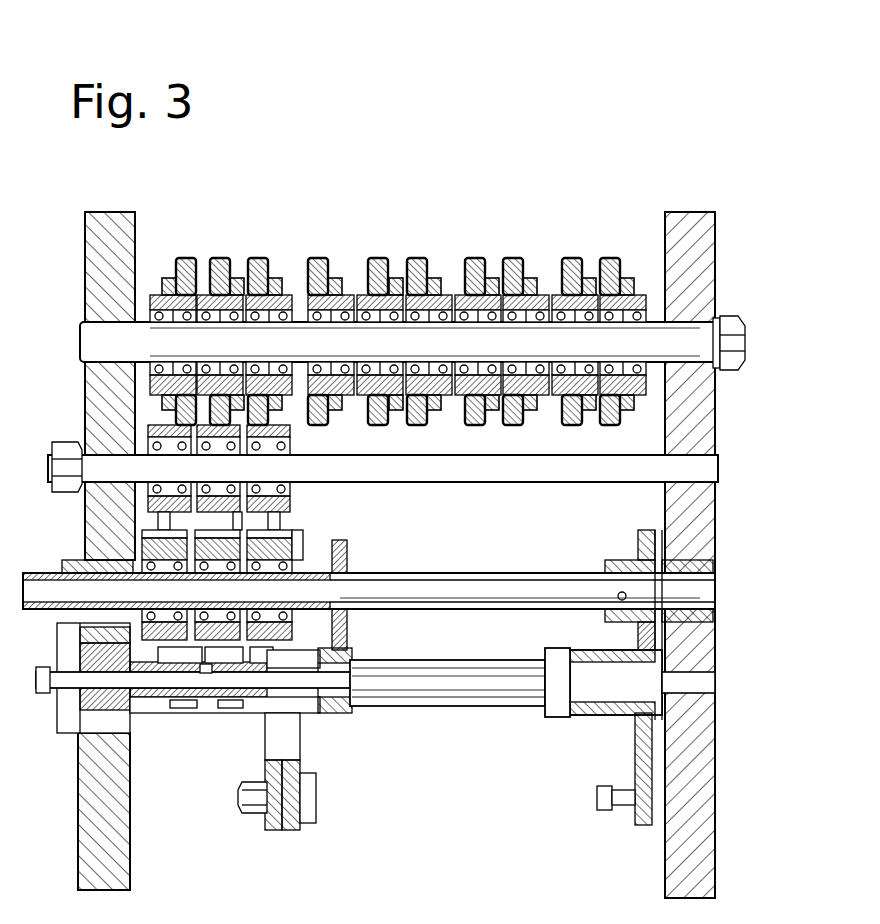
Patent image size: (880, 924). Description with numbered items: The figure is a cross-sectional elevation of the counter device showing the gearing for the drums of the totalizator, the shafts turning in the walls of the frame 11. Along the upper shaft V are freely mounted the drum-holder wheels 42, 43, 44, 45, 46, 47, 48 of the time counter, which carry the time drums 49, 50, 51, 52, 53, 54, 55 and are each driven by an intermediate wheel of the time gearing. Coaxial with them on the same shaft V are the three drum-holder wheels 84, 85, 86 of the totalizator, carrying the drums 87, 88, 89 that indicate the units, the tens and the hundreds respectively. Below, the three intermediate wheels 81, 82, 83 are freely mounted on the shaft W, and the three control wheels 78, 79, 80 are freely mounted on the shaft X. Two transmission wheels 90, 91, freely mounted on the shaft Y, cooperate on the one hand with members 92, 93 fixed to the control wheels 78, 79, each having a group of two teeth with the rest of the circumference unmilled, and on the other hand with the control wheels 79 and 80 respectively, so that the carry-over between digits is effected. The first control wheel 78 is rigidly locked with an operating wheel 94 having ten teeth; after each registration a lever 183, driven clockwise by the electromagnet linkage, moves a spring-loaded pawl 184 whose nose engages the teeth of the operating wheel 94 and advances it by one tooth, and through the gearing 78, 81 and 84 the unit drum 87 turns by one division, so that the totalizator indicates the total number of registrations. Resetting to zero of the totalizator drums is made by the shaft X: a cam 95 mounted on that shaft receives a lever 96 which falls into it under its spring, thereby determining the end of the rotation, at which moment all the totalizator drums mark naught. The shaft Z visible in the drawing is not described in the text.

The frame 11 is at (112, 837).
The drum-holder wheel 42 is at (632, 278).
The drum-holder wheel 43 is at (590, 278).
The drum-holder wheel 44 is at (530, 278).
The drum-holder wheel 45 is at (492, 278).
The drum-holder wheel 46 is at (434, 278).
The drum-holder wheel 47 is at (396, 278).
The drum-holder wheel 48 is at (336, 278).
The time drum 49 is at (613, 258).
The time drum 50 is at (572, 258).
The time drum 51 is at (515, 258).
The time drum 52 is at (475, 258).
The time drum 53 is at (418, 258).
The time drum 54 is at (380, 258).
The time drum 55 is at (318, 258).
The control wheel 78 is at (280, 528).
The control wheel 79 is at (225, 531).
The control wheel 80 is at (167, 531).
The intermediate wheel 81 is at (263, 447).
The intermediate wheel 82 is at (220, 442).
The intermediate wheel 83 is at (167, 442).
The drum-holder wheel 84 is at (276, 278).
The drum-holder wheel 85 is at (237, 278).
The drum-holder wheel 86 is at (168, 278).
The unit drum 87 is at (258, 258).
The tens drum 88 is at (219, 258).
The hundreds drum 89 is at (184, 258).
The transmission wheel 90 is at (236, 709).
The transmission wheel 91 is at (181, 709).
The two-tooth member 92 is at (267, 662).
The two-tooth member 93 is at (205, 674).
The operating wheel 94 is at (300, 637).
The cam 95 is at (640, 541).
The lever 96 is at (645, 751).
The lever 183 is at (272, 828).
The pawl 184 is at (292, 828).
The shaft V is at (680, 350).
The shaft W is at (688, 470).
The shaft X is at (690, 598).
The shaft Y is at (70, 678).
The shaft Z is at (690, 680).